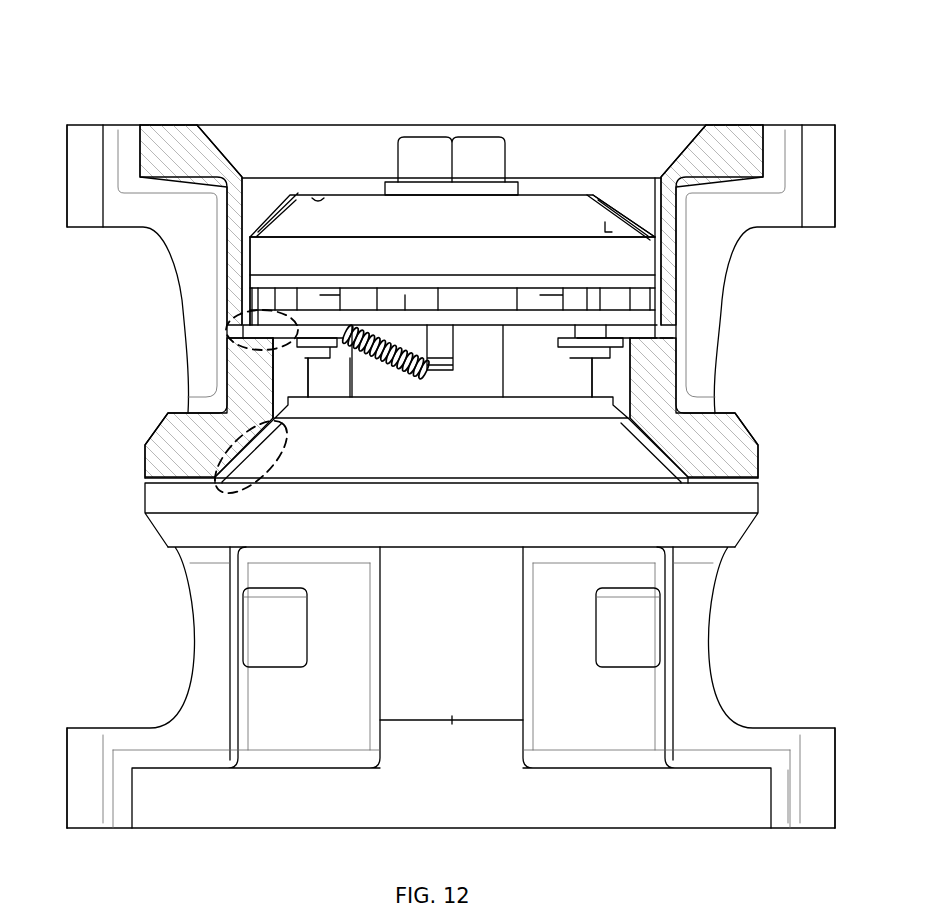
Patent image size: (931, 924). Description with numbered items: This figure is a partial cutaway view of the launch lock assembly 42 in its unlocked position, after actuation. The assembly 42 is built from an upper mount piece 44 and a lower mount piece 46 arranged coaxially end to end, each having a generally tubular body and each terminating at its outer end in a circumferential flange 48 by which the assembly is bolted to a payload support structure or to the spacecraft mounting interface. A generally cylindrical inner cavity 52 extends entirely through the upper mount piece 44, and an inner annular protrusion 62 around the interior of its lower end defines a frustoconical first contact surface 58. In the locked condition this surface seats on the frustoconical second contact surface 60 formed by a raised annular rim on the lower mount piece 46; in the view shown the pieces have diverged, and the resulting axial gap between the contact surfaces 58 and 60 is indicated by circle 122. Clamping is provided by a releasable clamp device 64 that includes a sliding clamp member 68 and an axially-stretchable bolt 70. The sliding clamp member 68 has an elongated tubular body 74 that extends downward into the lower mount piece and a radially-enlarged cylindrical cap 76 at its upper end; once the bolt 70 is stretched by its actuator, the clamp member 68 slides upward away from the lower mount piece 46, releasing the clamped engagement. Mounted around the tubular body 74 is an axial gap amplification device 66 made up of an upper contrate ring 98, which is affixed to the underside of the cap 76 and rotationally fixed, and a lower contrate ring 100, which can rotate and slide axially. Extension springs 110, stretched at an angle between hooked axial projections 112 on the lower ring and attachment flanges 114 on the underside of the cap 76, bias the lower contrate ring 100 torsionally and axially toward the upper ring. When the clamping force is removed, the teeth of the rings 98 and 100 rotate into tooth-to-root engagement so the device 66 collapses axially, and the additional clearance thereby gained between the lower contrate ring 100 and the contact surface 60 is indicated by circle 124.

The launch lock assembly 42 is at (158, 72).
The upper mount piece 44 is at (704, 316).
The lower mount piece 46 is at (702, 634).
The circumferential flange 48 is at (88, 128).
The inner cavity 52 is at (290, 378).
The first contact surface 58 is at (256, 448).
The second contact surface 60 is at (451, 498).
The inner annular protrusion 62 is at (451, 301).
The releasable clamp device 64 is at (557, 146).
The axial gap amplification device 66 is at (250, 280).
The sliding clamp member 68 is at (372, 204).
The axially-stretchable bolt 70 is at (424, 140).
The tubular body 74 is at (523, 392).
The cylindrical cap 76 is at (586, 196).
The upper contrate ring 98 is at (495, 290).
The lower contrate ring 100 is at (521, 320).
The extension springs 110 is at (412, 374).
The hooked axial projections 112 is at (456, 345).
The attachment flanges 114 is at (316, 348).
The circle 122 is at (291, 439).
The circle 124 is at (230, 318).